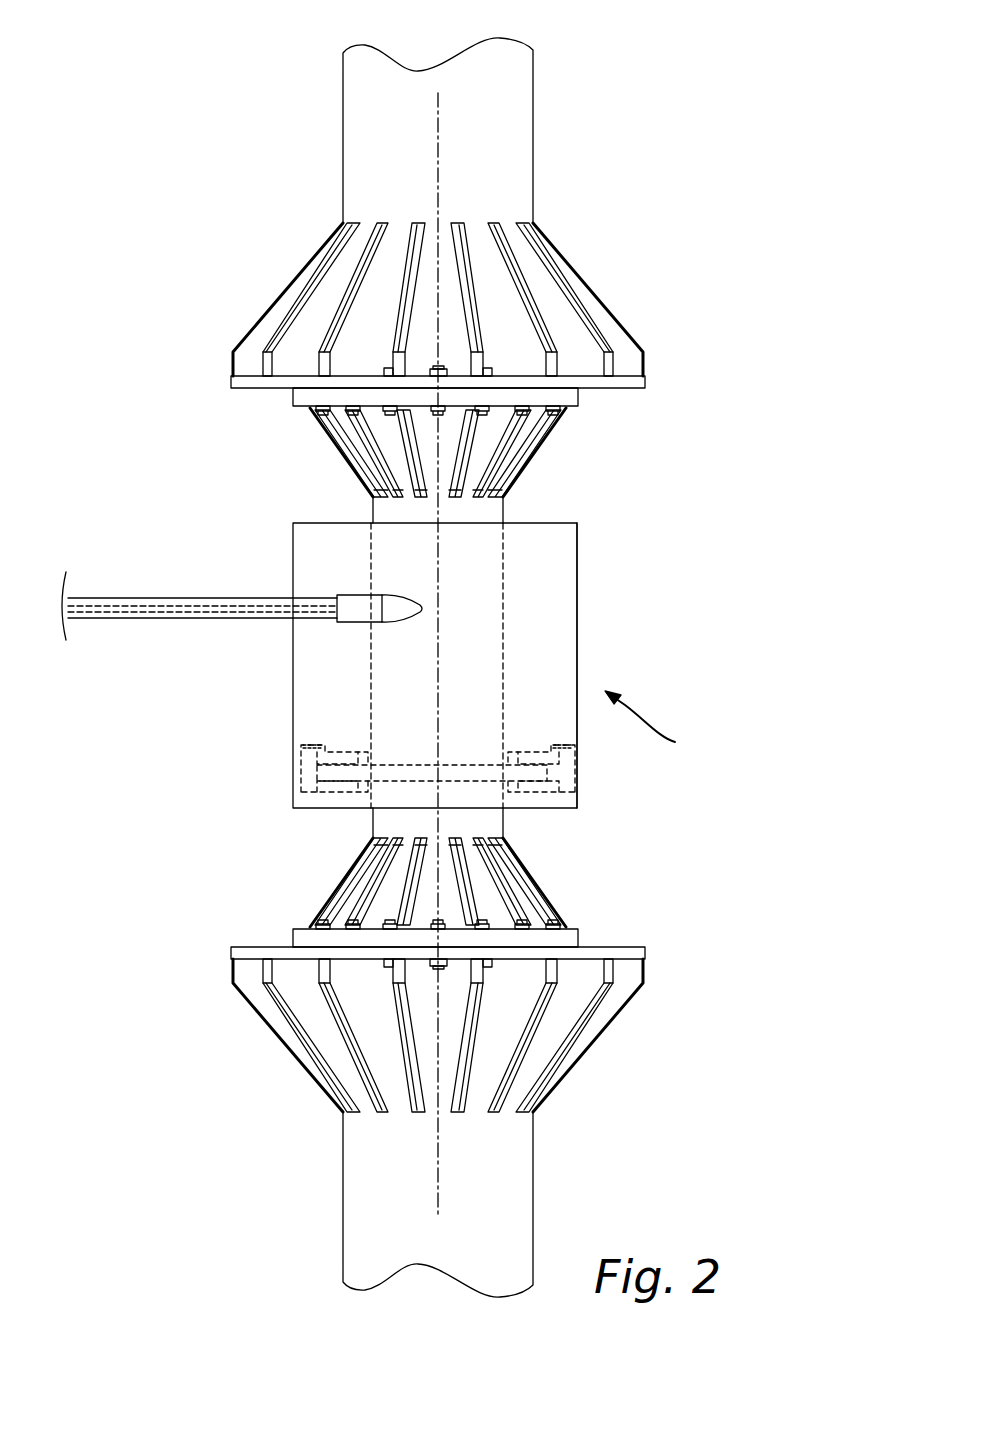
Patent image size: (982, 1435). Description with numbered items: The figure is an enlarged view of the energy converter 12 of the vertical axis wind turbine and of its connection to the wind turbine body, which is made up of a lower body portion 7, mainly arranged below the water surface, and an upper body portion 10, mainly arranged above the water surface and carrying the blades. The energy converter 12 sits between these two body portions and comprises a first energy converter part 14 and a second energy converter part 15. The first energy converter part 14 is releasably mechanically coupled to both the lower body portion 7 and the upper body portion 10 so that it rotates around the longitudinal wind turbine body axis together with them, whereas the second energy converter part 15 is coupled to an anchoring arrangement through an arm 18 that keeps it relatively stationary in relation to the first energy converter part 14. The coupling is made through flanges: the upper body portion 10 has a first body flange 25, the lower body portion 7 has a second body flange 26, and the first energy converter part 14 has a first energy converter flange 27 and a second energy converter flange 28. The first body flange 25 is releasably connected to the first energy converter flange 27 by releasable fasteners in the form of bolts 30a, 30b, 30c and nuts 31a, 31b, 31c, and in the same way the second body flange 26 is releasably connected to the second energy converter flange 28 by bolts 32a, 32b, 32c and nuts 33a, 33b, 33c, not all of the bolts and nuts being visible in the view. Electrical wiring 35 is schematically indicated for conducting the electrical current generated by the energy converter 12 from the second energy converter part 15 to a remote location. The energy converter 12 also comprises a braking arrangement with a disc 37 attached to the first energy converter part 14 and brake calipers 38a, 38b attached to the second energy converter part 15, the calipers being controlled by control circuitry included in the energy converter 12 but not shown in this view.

The lower body portion 7 is at (360, 1208).
The upper body portion 10 is at (527, 115).
The energy converter 12 is at (660, 726).
The first energy converter part 14 is at (477, 518).
The second energy converter part 15 is at (562, 643).
The arm 18 is at (175, 598).
The first body flange 25 is at (577, 374).
The second body flange 26 is at (530, 962).
The first energy converter flange 27 is at (387, 368).
The second energy converter flange 28 is at (560, 938).
The bolt 30a is at (386, 368).
The bolt 30b is at (416, 397).
The bolt 30c is at (487, 368).
The nut 31a is at (385, 412).
The nut 31b is at (407, 413).
The nut 31c is at (493, 410).
The bolt 32a is at (386, 972).
The bolt 32b is at (466, 983).
The bolt 32c is at (490, 963).
The nut 33a is at (387, 920).
The nut 33b is at (433, 903).
The nut 33c is at (488, 925).
The electrical wiring 35 is at (137, 620).
The disc 37 is at (460, 768).
The brake caliper 38a is at (318, 770).
The brake caliper 38b is at (560, 772).